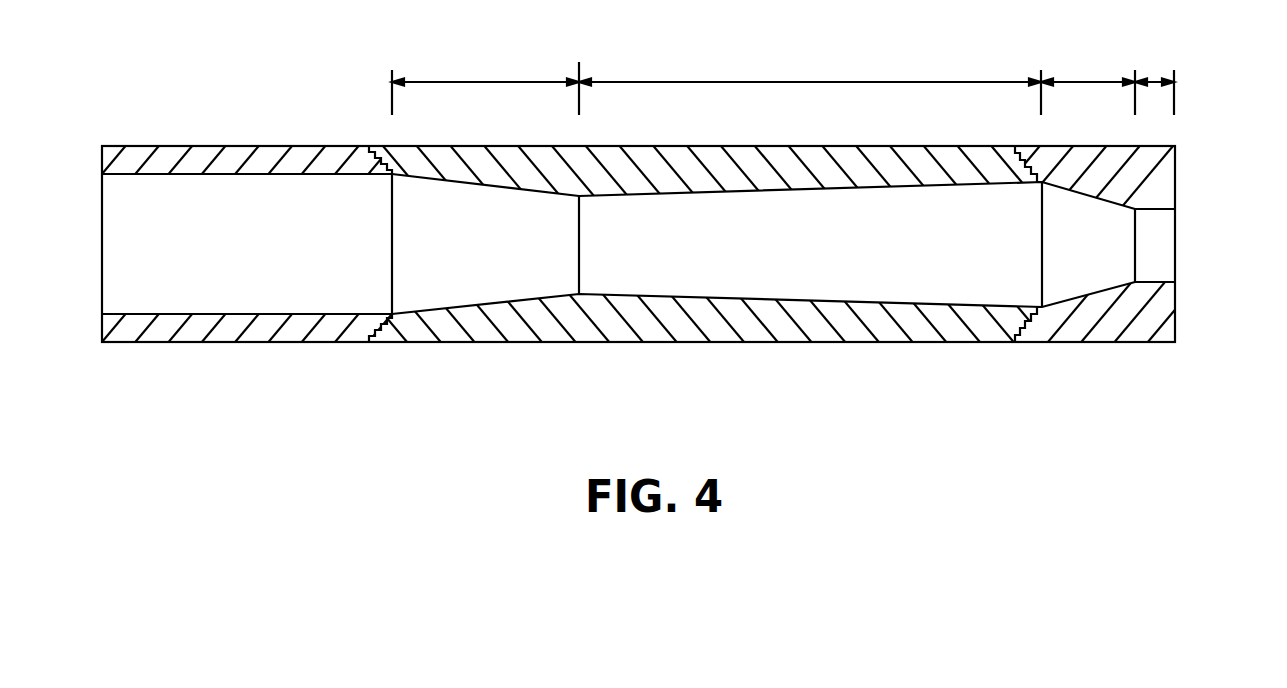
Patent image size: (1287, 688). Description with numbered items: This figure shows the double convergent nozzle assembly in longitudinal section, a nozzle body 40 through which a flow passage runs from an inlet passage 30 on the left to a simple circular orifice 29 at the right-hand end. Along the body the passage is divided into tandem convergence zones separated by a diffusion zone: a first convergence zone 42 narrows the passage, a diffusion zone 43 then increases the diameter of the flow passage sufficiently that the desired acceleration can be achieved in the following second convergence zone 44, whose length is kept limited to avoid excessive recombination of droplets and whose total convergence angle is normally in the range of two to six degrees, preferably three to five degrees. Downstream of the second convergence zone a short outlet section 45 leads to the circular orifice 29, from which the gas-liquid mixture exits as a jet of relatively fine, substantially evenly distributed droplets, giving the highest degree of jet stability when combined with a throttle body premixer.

The outlet orifice 29 is at (1152, 251).
The inlet bore 30 is at (167, 265).
The nozzle body 40 is at (950, 372).
The first converging section length 42 is at (485, 82).
The diverging section length 43 is at (810, 82).
The second converging section length 44 is at (1088, 82).
The outlet section length 45 is at (1154, 82).